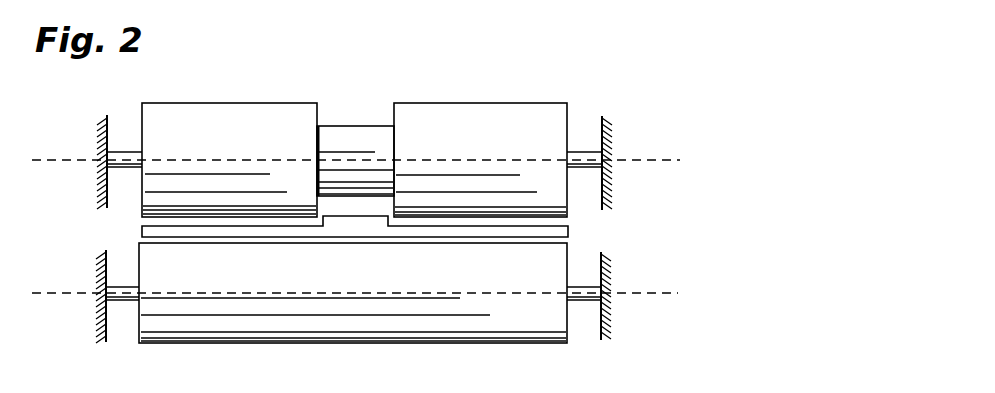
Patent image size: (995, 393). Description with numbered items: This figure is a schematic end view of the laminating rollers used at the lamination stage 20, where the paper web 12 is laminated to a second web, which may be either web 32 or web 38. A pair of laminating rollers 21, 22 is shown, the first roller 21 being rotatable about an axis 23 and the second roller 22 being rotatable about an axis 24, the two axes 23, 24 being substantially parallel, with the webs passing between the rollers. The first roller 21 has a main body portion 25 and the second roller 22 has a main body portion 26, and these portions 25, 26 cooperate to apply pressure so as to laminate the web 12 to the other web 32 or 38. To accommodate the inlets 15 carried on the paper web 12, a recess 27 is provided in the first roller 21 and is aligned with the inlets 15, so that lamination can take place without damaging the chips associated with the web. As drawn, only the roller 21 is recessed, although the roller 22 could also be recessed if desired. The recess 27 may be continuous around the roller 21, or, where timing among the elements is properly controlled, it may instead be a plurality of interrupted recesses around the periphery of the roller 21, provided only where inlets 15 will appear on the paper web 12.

The lamination stage 20 is at (627, 67).
The first laminating roller 21 is at (490, 120).
The second laminating roller 22 is at (520, 345).
The axis of the first roller 23 is at (652, 162).
The axis of the second roller 24 is at (637, 295).
The main body portion of the first roller 25 is at (217, 130).
The main body portion of the second roller 26 is at (330, 277).
The recess 27 is at (389, 106).
The inlets 15 is at (365, 220).
The paper web 12 is at (568, 232).
The second web 32 is at (355, 226).
The second web 38 is at (355, 226).